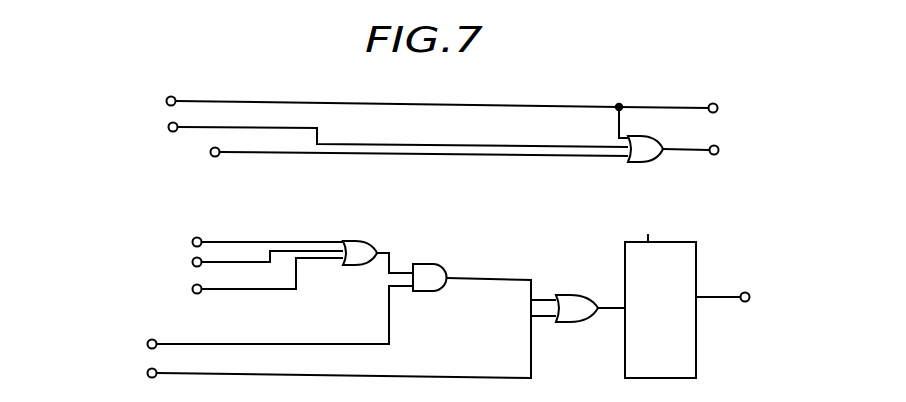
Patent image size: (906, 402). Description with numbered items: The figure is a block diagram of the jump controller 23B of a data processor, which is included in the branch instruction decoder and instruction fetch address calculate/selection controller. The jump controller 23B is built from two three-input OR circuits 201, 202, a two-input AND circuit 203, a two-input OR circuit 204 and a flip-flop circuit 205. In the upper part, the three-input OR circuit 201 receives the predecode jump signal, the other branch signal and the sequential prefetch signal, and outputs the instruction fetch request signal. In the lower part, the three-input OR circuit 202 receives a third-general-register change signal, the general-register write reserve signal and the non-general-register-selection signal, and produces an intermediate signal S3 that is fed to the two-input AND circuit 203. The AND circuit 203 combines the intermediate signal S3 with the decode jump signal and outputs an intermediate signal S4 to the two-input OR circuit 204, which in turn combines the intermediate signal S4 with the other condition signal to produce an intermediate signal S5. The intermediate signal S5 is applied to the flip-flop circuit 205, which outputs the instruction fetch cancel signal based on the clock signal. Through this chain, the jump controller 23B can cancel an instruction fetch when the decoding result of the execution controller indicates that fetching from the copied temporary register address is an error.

The jump controller 23B is at (122, 70).
The three-input OR circuit 201 is at (645, 164).
The three-input OR circuit 202 is at (360, 239).
The two-input AND circuit 203 is at (430, 262).
The two-input OR circuit 204 is at (566, 325).
The flip-flop circuit 205 is at (697, 362).
The intermediate signal S3 is at (389, 253).
The intermediate signal S4 is at (481, 282).
The intermediate signal S5 is at (600, 297).